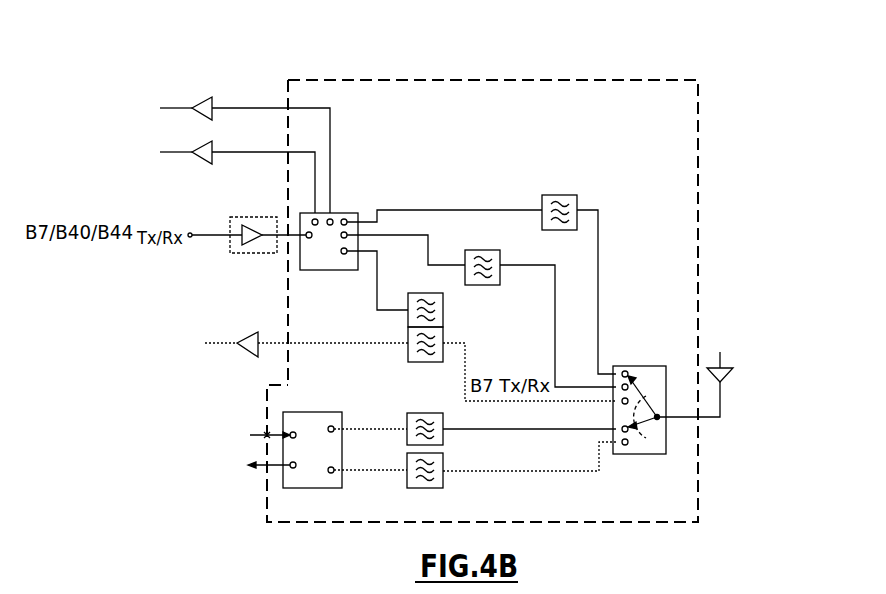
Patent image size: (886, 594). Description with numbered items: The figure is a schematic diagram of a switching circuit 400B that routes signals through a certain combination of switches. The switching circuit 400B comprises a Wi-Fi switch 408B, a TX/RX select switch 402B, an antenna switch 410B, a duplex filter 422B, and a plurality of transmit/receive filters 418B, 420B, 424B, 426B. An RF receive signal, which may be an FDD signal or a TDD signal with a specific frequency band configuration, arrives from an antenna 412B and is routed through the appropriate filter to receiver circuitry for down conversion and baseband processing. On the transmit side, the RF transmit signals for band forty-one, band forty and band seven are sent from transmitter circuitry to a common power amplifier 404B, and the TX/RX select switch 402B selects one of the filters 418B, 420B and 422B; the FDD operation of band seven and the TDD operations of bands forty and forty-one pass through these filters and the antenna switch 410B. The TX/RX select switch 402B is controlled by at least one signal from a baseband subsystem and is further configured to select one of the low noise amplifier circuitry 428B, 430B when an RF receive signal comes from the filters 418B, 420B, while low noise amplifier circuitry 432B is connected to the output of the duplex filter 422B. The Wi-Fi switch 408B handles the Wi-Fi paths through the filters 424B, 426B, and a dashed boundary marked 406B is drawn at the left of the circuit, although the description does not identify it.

The switching circuit 400B is at (532, 72).
The TX/RX select switch 402B is at (348, 213).
The common power amplifier 404B is at (263, 254).
The module boundary 406B is at (288, 303).
The Wi-Fi switch 408B is at (283, 475).
The antenna switch 410B is at (650, 454).
The antenna 412B is at (720, 352).
The transmit/receive filter 418B is at (577, 200).
The transmit/receive filter 420B is at (465, 255).
The duplex filter 422B is at (443, 313).
The transmit/receive filter 424B is at (443, 421).
The transmit/receive filter 426B is at (443, 462).
The low noise amplifier circuitry 428B is at (199, 99).
The low noise amplifier circuitry 430B is at (201, 164).
The low noise amplifier circuitry 432B is at (250, 358).